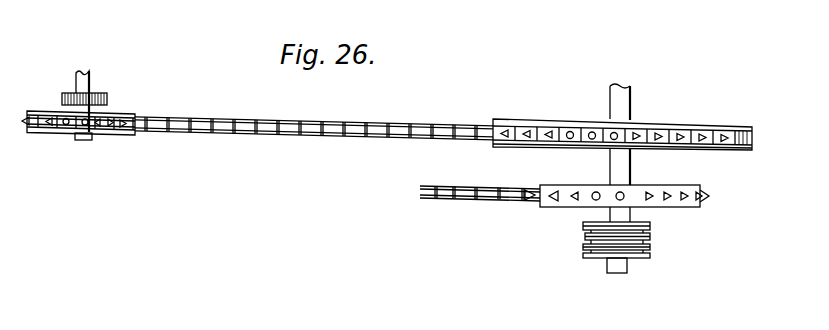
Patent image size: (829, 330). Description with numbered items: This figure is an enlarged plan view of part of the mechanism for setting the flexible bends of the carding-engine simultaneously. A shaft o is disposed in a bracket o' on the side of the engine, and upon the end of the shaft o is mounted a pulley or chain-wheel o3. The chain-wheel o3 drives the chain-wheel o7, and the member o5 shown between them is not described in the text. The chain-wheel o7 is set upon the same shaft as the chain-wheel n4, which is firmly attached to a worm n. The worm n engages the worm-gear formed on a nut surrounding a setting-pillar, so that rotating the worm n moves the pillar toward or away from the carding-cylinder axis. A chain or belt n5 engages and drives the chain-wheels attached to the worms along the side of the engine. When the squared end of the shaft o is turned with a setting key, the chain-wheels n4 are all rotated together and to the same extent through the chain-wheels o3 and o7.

The shaft o is at (95, 87).
The bracket o' is at (68, 91).
The chain-wheel o3 is at (115, 113).
The rack bar o5 is at (314, 140).
The chain-wheel o7 is at (530, 122).
The worm n is at (635, 239).
The chain-wheel n4 is at (653, 190).
The chain n5 is at (480, 204).